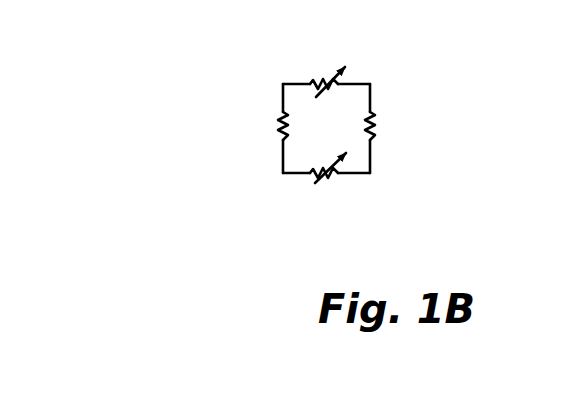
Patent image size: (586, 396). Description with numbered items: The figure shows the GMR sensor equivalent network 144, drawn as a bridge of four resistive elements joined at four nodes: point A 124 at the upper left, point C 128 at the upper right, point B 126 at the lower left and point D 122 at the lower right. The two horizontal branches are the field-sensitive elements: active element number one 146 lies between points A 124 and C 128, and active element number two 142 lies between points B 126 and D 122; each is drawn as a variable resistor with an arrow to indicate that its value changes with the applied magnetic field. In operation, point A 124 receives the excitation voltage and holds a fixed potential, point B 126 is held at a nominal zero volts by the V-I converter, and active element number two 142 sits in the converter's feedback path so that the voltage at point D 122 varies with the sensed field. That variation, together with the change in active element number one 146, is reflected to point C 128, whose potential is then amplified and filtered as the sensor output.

The point D 122 is at (371, 170).
The point A 124 is at (283, 87).
The point B 126 is at (283, 176).
The point C 128 is at (371, 85).
The active element number two 142 is at (354, 174).
The GMR sensor equivalent network 144 is at (444, 50).
The active element number one 146 is at (352, 80).